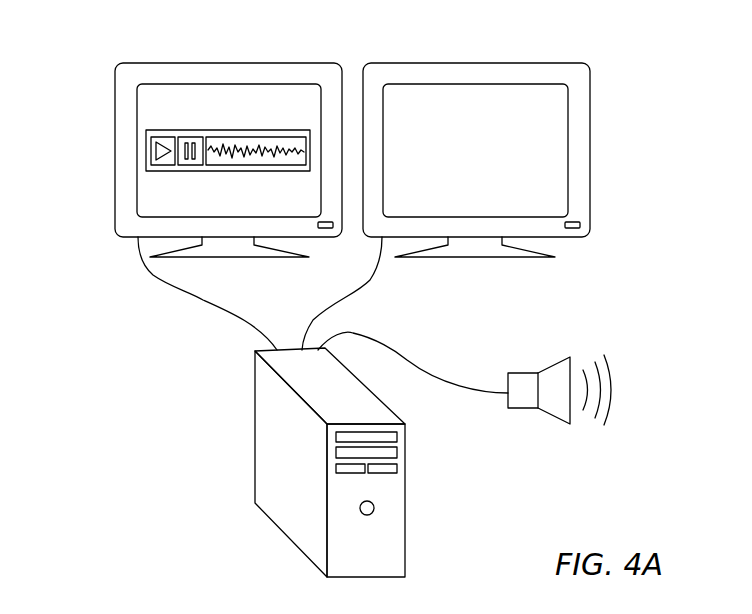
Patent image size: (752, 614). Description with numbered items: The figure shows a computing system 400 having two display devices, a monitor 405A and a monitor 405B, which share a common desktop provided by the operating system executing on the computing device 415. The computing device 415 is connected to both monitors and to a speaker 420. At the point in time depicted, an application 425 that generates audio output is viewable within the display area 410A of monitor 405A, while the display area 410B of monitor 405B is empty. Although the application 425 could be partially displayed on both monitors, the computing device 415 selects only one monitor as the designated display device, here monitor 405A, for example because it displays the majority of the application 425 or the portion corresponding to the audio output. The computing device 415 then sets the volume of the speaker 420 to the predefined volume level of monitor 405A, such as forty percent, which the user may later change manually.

The computing system 400 is at (621, 82).
The monitor 405A is at (231, 54).
The monitor 405B is at (490, 54).
The display area 410A is at (137, 185).
The second display screen 410B is at (568, 183).
The computing device 415 is at (255, 428).
The speaker 420 is at (558, 360).
The application 425 is at (188, 130).